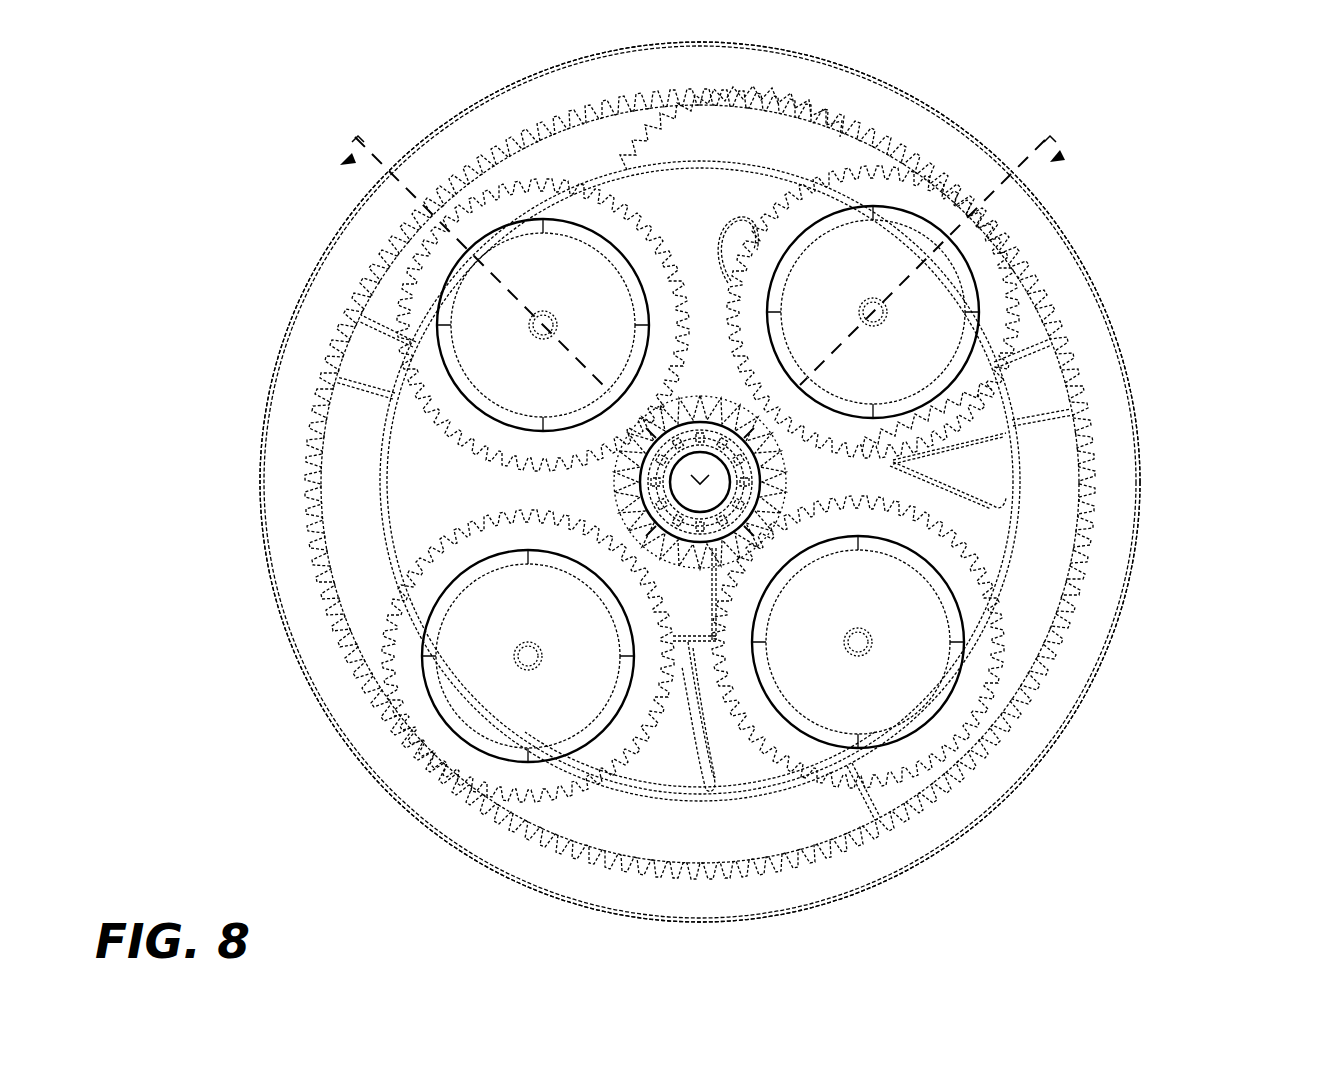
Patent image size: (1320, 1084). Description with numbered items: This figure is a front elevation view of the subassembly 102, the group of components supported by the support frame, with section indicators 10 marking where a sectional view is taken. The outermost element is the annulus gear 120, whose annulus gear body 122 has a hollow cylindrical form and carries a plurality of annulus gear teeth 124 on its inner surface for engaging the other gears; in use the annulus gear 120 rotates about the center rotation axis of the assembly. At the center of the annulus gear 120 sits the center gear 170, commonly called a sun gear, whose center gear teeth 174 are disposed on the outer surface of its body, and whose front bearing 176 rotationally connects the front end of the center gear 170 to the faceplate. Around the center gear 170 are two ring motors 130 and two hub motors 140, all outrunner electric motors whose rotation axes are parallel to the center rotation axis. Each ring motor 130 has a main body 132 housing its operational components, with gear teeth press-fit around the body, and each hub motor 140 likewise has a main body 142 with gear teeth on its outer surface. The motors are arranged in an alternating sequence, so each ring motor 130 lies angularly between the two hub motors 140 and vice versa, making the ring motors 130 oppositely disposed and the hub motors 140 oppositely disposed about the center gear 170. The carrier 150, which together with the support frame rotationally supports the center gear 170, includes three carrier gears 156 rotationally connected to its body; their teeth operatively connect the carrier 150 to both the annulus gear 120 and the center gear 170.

The section line 10 is at (705, 253).
The subassembly 102 is at (1258, 96).
The annulus gear 120 is at (1092, 330).
The annulus gear body 122 is at (700, 482).
The annulus gear teeth 124 is at (1096, 513).
The ring motors 130 is at (901, 244).
The main body 132 is at (799, 317).
The hub motors 140 is at (571, 248).
The main body 142 is at (577, 317).
The carrier 150 is at (407, 480).
The carrier gears 156 is at (790, 146).
The center gear 170 is at (630, 490).
The center gear teeth 174 is at (700, 482).
The front bearing 176 is at (699, 517).